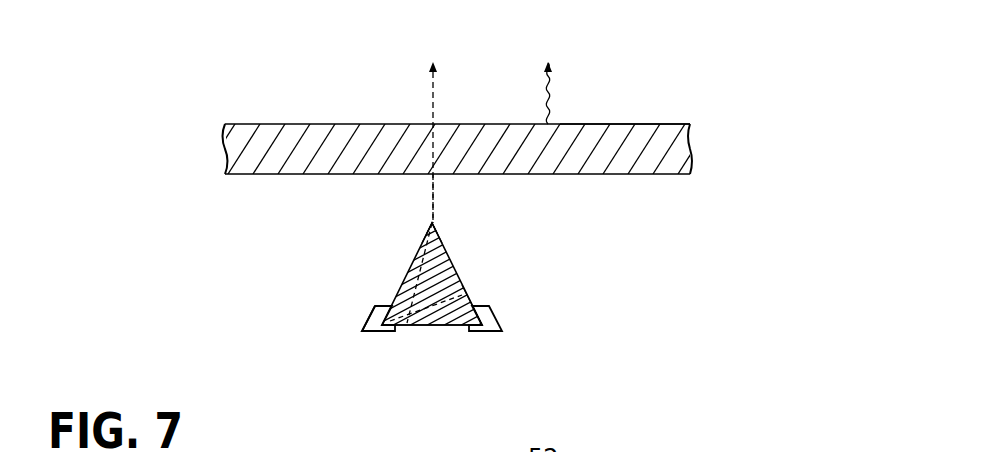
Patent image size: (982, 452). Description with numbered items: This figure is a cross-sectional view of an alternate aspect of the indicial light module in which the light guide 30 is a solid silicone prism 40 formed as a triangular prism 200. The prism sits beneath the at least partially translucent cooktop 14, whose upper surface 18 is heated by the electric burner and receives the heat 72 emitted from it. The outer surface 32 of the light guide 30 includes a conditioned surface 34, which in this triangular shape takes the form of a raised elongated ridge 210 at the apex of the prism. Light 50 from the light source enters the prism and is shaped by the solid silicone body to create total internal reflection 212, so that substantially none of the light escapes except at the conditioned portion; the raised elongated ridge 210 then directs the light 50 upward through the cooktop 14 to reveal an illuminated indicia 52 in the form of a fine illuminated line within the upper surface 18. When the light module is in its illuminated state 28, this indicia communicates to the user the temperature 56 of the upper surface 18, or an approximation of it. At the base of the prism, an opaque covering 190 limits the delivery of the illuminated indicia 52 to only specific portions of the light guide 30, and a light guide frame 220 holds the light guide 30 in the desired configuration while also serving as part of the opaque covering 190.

The cooktop 14 is at (262, 122).
The upper surface 18 is at (612, 124).
The illuminated state 28 is at (498, 280).
The light guide 30 is at (387, 264).
The outer surface 32 is at (450, 256).
The conditioned surface 34 is at (428, 223).
The solid silicone prism 40 is at (434, 336).
The light 50 is at (427, 192).
The illuminated indicia 52 is at (436, 58).
The temperature 56 is at (592, 106).
The heat 72 is at (551, 95).
The opaque covering 190 is at (503, 331).
The triangular prism 200 is at (372, 299).
The raised elongated ridge 210 is at (434, 222).
The total internal reflection 212 is at (458, 300).
The light guide frame 220 is at (374, 331).